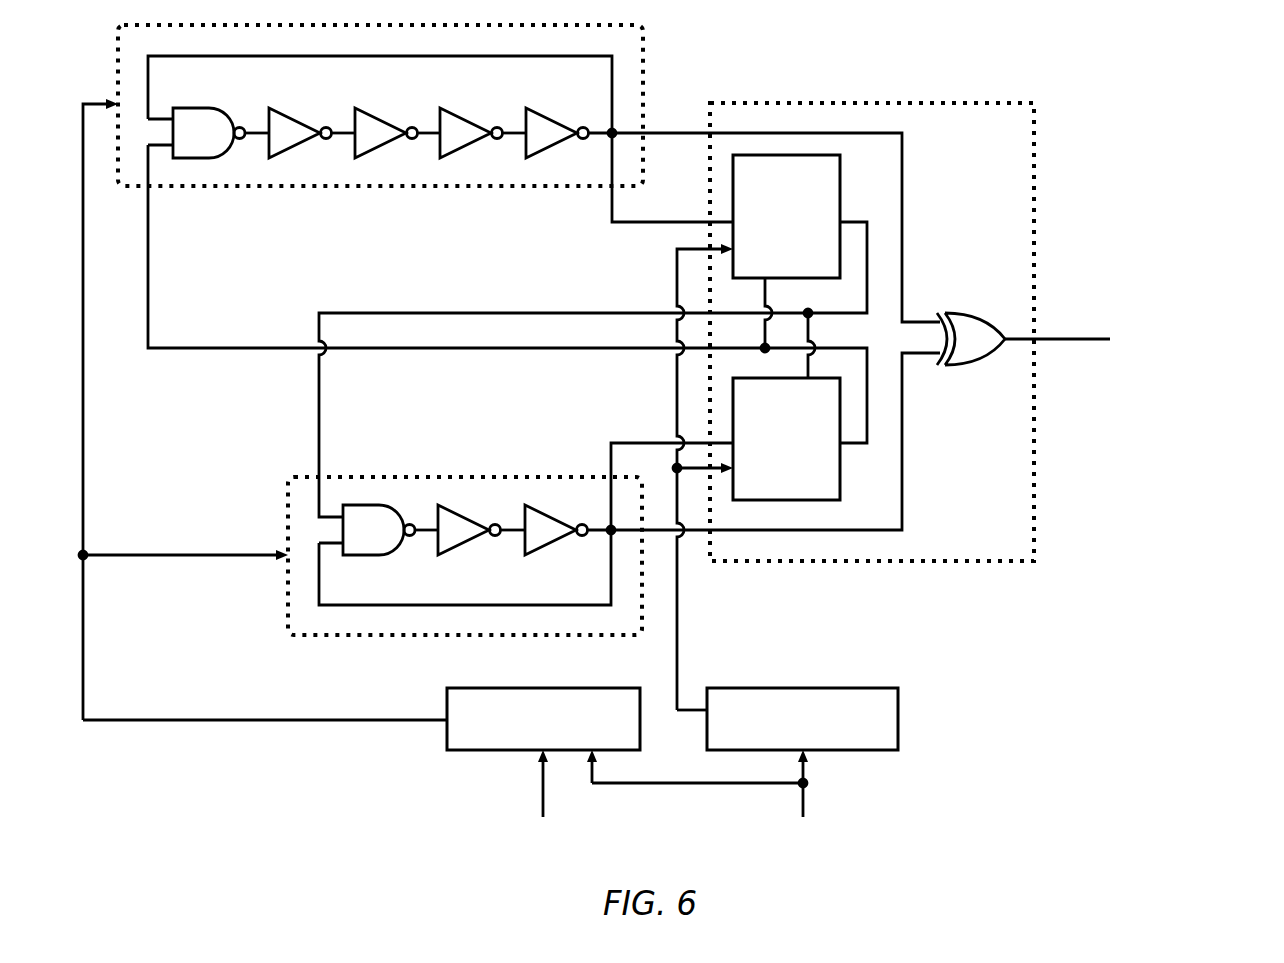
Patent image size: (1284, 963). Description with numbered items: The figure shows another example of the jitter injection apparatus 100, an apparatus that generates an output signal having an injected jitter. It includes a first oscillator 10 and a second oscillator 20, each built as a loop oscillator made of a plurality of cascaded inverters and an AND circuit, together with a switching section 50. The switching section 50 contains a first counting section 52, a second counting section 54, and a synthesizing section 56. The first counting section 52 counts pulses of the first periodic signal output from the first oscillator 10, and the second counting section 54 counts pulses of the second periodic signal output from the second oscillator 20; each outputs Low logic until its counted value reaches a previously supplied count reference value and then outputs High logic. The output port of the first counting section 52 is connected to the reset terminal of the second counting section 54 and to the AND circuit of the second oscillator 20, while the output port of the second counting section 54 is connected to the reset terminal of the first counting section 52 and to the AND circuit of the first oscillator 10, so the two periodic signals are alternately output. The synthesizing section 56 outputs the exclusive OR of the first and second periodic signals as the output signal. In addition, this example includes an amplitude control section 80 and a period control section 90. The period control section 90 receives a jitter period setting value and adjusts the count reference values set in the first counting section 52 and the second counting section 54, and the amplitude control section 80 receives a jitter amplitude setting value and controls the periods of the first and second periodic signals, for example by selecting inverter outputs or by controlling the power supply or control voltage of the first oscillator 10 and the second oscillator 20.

The jitter injection apparatus 100 is at (1184, 55).
The first oscillator 10 is at (382, 186).
The second oscillator 20 is at (465, 477).
The switching section 50 is at (875, 103).
The first counting section 52 is at (840, 177).
The second counting section 54 is at (840, 480).
The synthesizing section 56 is at (968, 313).
The amplitude control section 80 is at (545, 688).
The period control section 90 is at (805, 688).